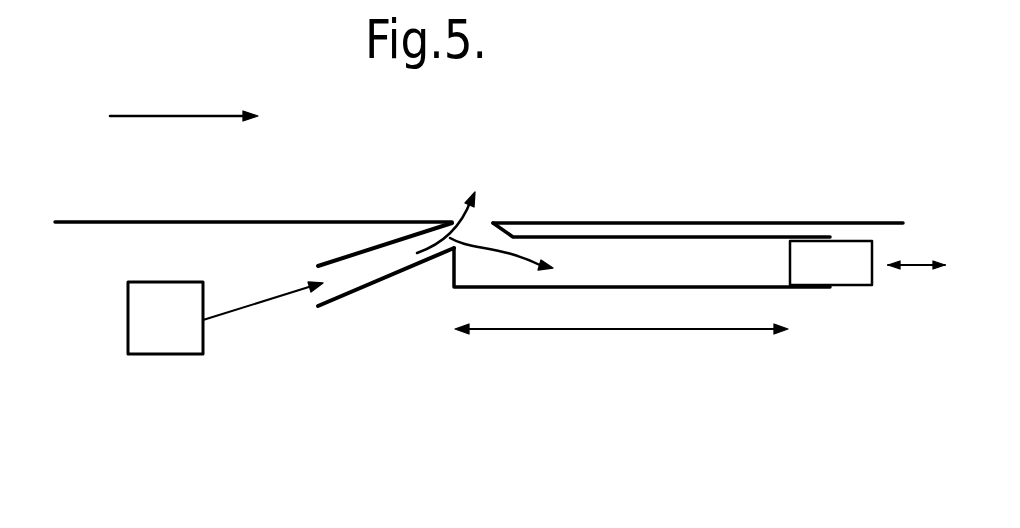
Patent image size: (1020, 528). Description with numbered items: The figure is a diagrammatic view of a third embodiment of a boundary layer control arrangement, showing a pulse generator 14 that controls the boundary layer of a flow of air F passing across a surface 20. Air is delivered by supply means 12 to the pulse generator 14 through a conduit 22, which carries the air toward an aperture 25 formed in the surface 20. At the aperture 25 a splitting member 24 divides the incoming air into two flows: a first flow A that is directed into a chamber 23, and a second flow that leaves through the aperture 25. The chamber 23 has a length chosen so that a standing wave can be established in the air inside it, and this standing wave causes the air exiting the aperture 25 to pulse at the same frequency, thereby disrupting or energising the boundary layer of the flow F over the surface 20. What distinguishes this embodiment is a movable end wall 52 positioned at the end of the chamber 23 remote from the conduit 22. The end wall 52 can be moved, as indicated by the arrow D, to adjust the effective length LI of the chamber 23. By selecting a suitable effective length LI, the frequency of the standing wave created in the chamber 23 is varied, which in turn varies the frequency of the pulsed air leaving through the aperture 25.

The supply means 12 is at (157, 345).
The pulse generator 14 is at (690, 342).
The surface 20 is at (112, 220).
The conduit 22 is at (368, 273).
The chamber 23 is at (714, 250).
The splitting member 24 is at (503, 218).
The aperture 25 is at (483, 217).
The movable end wall 52 is at (855, 222).
The flow of air F is at (161, 115).
The arrow indicating end wall movement D is at (450, 221).
The first flow A is at (503, 257).
The effective length LI is at (585, 330).